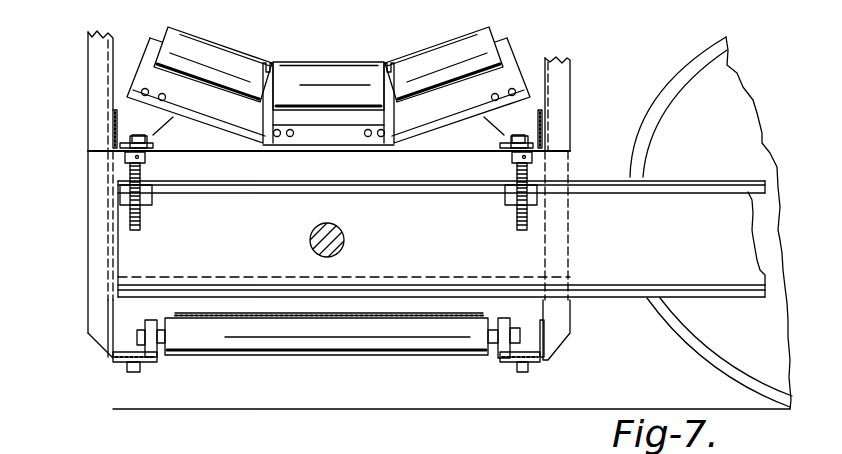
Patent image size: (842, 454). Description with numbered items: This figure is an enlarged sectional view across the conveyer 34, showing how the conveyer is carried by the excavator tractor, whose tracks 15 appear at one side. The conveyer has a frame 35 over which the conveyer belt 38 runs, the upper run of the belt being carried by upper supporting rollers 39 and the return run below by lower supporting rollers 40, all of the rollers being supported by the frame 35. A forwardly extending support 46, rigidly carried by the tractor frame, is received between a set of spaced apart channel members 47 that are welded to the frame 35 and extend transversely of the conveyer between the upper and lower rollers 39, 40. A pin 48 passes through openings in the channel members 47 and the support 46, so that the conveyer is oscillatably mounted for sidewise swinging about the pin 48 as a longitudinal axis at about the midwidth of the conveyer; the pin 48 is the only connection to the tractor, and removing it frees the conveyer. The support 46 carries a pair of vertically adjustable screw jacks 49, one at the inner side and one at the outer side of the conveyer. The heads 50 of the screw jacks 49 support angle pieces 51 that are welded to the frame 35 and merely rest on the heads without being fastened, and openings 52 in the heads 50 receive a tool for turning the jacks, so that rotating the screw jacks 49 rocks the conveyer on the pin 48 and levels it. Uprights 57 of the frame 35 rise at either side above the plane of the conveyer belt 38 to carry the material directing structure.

The tracks 15 is at (735, 360).
The conveyer 34 is at (582, 82).
The frame 35 is at (563, 112).
The conveyer belt 38 is at (340, 60).
The upper supporting rollers 39 is at (288, 78).
The lower supporting rollers 40 is at (357, 348).
The supports 46 is at (630, 287).
The channel members 47 is at (97, 197).
The pin 48 is at (345, 236).
The screw jacks 49 is at (142, 220).
The heads 50 is at (150, 163).
The angle pieces 51 is at (550, 135).
The openings 52 is at (147, 157).
The uprights 57 is at (97, 89).